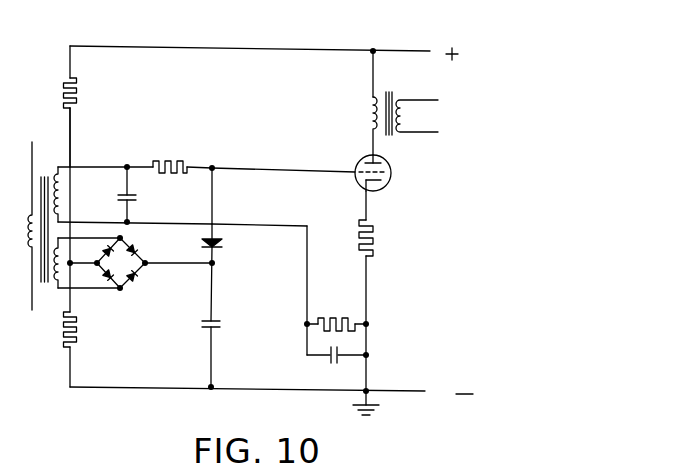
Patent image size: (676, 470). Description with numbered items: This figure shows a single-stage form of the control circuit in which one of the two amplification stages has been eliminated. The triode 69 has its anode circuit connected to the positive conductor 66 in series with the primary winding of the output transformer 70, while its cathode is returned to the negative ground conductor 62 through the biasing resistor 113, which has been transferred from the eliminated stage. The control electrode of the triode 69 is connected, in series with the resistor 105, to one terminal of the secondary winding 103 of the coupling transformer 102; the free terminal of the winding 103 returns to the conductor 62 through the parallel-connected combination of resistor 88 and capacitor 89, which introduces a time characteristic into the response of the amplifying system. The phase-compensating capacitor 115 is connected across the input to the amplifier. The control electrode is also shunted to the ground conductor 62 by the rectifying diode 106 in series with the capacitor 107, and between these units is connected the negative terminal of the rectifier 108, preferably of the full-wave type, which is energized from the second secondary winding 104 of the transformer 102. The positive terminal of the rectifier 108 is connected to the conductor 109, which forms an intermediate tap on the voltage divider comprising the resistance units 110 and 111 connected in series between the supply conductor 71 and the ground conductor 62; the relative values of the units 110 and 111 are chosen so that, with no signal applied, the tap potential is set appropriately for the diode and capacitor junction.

The ground conductor 62 is at (378, 391).
The positive conductor 66 is at (352, 51).
The triode 69 is at (392, 167).
The output transformer 70 is at (395, 99).
The conductor 71 is at (143, 46).
The resistor 88 is at (333, 318).
The capacitor 89 is at (328, 361).
The coupling transformer 102 is at (42, 176).
The secondary winding 103 is at (64, 210).
The secondary winding 104 is at (52, 282).
The resistor 105 is at (168, 162).
The diode rectifier 106 is at (201, 244).
The capacitor 107 is at (200, 320).
The rectifier 108 is at (121, 263).
The conductor 109 is at (72, 141).
The resistance unit 110 is at (78, 95).
The resistance unit 111 is at (76, 332).
The biasing resistor 113 is at (374, 235).
The phase-compensating capacitor 115 is at (138, 197).